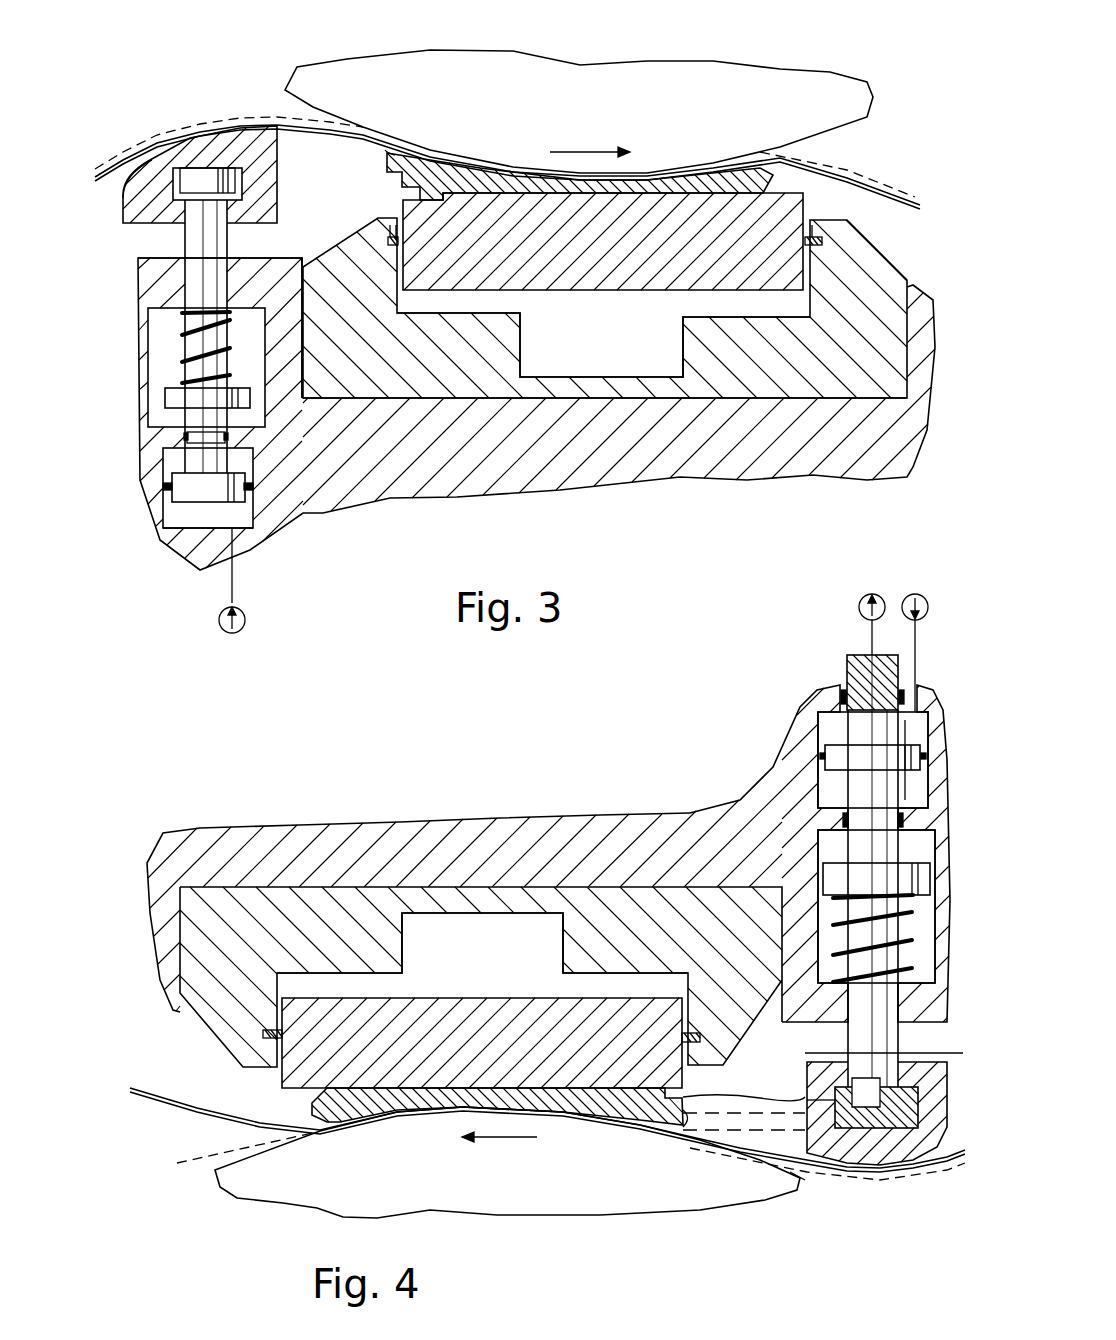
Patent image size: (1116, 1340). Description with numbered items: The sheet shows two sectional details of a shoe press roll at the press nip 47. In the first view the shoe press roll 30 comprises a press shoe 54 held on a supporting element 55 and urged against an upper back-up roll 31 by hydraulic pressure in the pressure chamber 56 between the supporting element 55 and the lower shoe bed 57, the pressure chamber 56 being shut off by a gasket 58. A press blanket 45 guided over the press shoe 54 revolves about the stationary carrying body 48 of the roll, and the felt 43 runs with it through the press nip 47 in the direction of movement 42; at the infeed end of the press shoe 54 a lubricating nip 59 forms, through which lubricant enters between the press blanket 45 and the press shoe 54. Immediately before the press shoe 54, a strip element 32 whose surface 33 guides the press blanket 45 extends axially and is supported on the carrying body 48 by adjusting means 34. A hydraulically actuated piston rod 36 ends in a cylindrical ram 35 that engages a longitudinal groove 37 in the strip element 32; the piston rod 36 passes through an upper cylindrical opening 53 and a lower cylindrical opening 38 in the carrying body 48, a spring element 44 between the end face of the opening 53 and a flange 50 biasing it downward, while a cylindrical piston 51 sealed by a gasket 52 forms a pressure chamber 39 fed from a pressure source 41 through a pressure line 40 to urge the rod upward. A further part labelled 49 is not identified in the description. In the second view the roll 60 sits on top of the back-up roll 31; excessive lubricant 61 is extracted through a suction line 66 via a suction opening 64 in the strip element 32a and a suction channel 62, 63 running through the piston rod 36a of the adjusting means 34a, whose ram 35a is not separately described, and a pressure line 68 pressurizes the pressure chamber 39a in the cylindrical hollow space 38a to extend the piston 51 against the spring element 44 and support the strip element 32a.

In FIG. 3, the shoe press roll 30 is at (185, 88).
In FIG. 3, the back-up roll 31 is at (832, 90).
In FIG. 4, the back-up roll 31 is at (458, 1190).
In FIG. 3, the strip element 32 is at (205, 143).
In FIG. 3, the surface 33 is at (148, 153).
In FIG. 3, the adjusting means 34 is at (240, 247).
In FIG. 3, the cylindrical ram 35 is at (242, 170).
In FIG. 3, the piston rod 36 is at (193, 245).
In FIG. 3, the longitudinal groove 37 is at (242, 184).
In FIG. 3, the cylindrical opening 38 is at (255, 502).
In FIG. 3, the pressure chamber 39 is at (190, 533).
In FIG. 3, the pressure line 40 is at (233, 586).
In FIG. 3, the pressure source 41 is at (246, 628).
In FIG. 3, the direction of movement 42 is at (588, 150).
In FIG. 4, the direction of movement 42 is at (508, 1138).
In FIG. 3, the felt 43 is at (250, 115).
In FIG. 4, the felt 43 is at (193, 1160).
In FIG. 3, the spring element 44 is at (168, 358).
In FIG. 4, the spring element 44 is at (834, 983).
In FIG. 3, the press blanket 45 is at (887, 184).
In FIG. 4, the press blanket 45 is at (933, 1158).
In FIG. 3, the press nip 47 is at (875, 146).
In FIG. 3, the carrying body 48 is at (618, 455).
In FIG. 4, the carrying body 48 is at (553, 830).
In FIG. 3, the housing block 49 is at (162, 300).
In FIG. 3, the flange 50 is at (172, 396).
In FIG. 4, the flange 50 is at (873, 892).
In FIG. 3, the cylindrical piston 51 is at (190, 517).
In FIG. 4, the cylindrical piston 51 is at (840, 755).
In FIG. 3, the gasket 52 is at (163, 490).
In FIG. 4, the gasket 52 is at (820, 755).
In FIG. 3, the cylindrical opening 53 is at (160, 328).
In FIG. 4, the cylindrical opening 53 is at (820, 845).
In FIG. 3, the press shoe 54 is at (482, 170).
In FIG. 4, the press shoe 54 is at (625, 1100).
In FIG. 3, the supporting element 55 is at (612, 263).
In FIG. 4, the supporting element 55 is at (407, 1080).
In FIG. 3, the pressure chamber 56 is at (606, 360).
In FIG. 4, the pressure chamber 56 is at (496, 955).
In FIG. 3, the shoe bed 57 is at (487, 388).
In FIG. 3, the gasket 58 is at (392, 236).
In FIG. 4, the gasket 58 is at (268, 1036).
In FIG. 3, the lubricating nip 59 is at (385, 147).
In FIG. 4, the lubricating nip 59 is at (698, 1118).
In FIG. 4, the roll 60 is at (397, 778).
In FIG. 4, the excessive lubricant 61 is at (742, 1097).
In FIG. 4, the suction channel 62 is at (820, 1112).
In FIG. 4, the suction channel 63 is at (872, 672).
In FIG. 4, the suction opening 64 is at (795, 1180).
In FIG. 4, the suction line 66 is at (866, 637).
In FIG. 4, the pressure line 68 is at (917, 643).
In FIG. 4, the strip element 32a is at (872, 1153).
In FIG. 4, the adjusting means 34a is at (914, 1035).
In FIG. 4, the screw head 35a is at (897, 1122).
In FIG. 4, the piston rod 36a is at (857, 787).
In FIG. 4, the cylindrical hollow space 38a is at (800, 706).
In FIG. 4, the pressure chamber 39a is at (913, 727).